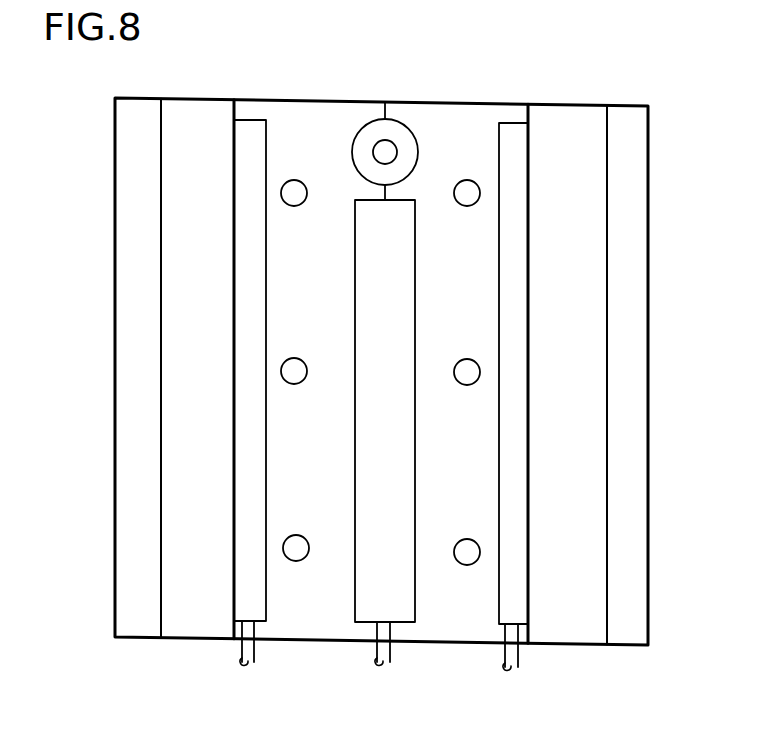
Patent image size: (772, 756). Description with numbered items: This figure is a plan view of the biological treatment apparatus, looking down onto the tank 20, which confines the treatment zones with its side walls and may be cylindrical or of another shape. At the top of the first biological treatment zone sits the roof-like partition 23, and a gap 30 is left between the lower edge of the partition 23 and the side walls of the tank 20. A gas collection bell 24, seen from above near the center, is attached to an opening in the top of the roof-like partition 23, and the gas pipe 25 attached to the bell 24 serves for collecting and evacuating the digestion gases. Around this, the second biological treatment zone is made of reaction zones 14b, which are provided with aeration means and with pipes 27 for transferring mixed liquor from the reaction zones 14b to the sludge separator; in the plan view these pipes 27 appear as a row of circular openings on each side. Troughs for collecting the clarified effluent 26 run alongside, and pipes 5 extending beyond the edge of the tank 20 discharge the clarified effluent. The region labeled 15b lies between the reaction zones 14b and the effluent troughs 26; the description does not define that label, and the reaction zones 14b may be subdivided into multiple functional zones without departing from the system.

The tank 20 is at (652, 168).
The roof-like partition 23 is at (160, 168).
The gap 30 is at (138, 497).
The reaction zone 14b is at (221, 580).
The electrode plate 15b is at (332, 288).
The gas collection bell 24 is at (401, 124).
The gas pipe 25 is at (378, 143).
The trough for collecting the clarified effluent 26 is at (512, 322).
The pipe for transferring mixed liquor 27 is at (288, 536).
The pipe for discharging the clarified effluent 5 is at (240, 657).